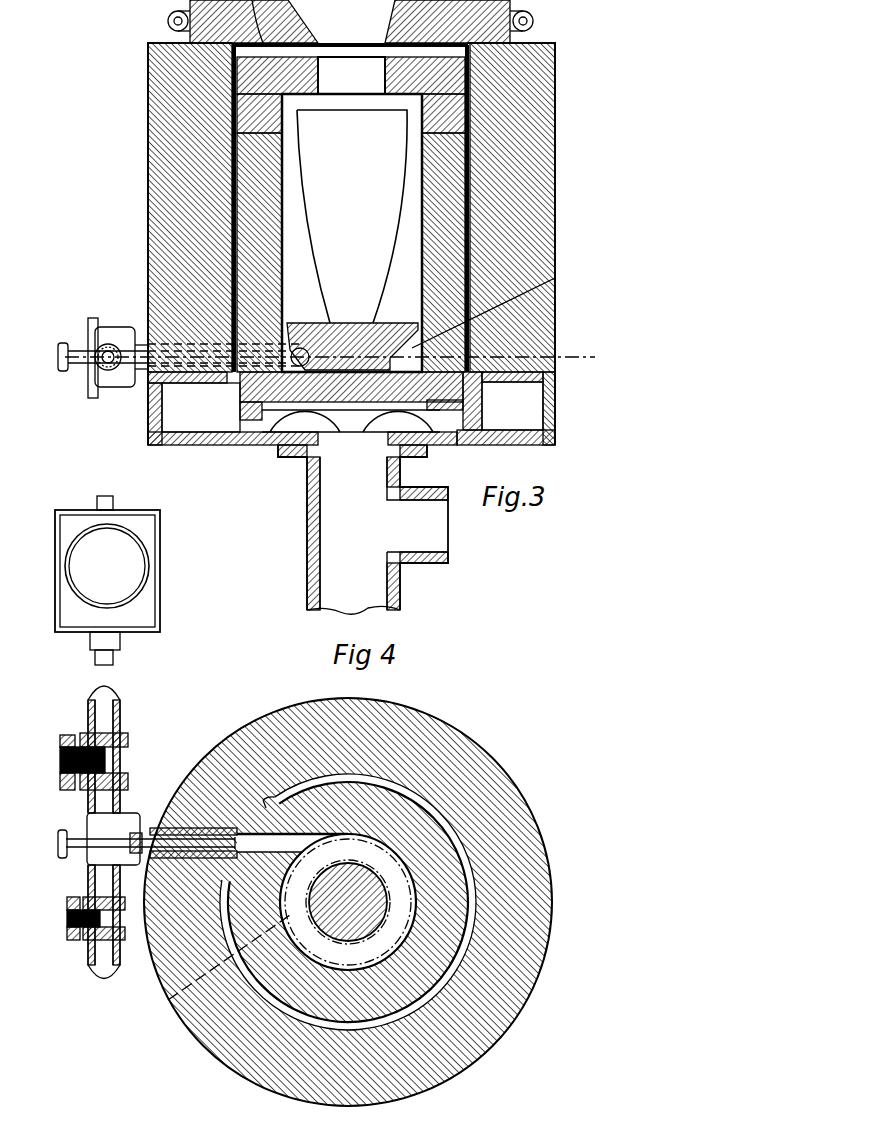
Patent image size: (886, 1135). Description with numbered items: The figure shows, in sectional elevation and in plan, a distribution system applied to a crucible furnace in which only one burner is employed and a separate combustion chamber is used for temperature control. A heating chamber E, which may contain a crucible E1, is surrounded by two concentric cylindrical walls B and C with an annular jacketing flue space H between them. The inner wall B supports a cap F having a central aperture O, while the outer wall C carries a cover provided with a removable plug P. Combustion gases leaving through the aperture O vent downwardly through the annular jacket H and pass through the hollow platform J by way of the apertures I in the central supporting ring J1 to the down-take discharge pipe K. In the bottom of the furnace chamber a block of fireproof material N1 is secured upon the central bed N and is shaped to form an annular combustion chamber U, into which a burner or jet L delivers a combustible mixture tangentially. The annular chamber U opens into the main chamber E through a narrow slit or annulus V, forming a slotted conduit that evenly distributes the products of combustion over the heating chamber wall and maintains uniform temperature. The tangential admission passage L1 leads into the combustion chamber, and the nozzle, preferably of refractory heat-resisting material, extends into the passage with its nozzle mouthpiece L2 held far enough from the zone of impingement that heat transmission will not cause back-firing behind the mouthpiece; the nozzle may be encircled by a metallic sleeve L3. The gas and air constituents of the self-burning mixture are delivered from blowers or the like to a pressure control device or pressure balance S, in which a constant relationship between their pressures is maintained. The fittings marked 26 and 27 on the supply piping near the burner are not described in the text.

In FIG. 3, the removable plug P is at (350, 21).
In FIG. 3, the central aperture O is at (351, 75).
In FIG. 3, the cap F is at (458, 93).
In FIG. 3, the heating chamber E is at (415, 158).
In FIG. 3, the crucible E1 is at (352, 215).
In FIG. 3, the inner cylindrical wall B is at (448, 178).
In FIG. 4, the inner cylindrical wall B is at (402, 823).
In FIG. 3, the annular jacketing flue space H is at (470, 204).
In FIG. 4, the annular jacketing flue space H is at (457, 855).
In FIG. 3, the outer cylindrical wall C is at (540, 246).
In FIG. 4, the outer cylindrical wall C is at (477, 790).
In FIG. 3, the annular combustion chamber U is at (496, 305).
In FIG. 3, the hollow platform J is at (540, 405).
In FIG. 3, the central supporting ring J1 is at (470, 420).
In FIG. 3, the central bed N is at (463, 395).
In FIG. 3, the block of fireproof material N1 is at (345, 330).
In FIG. 4, the block of fireproof material N1 is at (370, 910).
In FIG. 3, the narrow slit or annulus V is at (418, 323).
In FIG. 4, the narrow slit or annulus V is at (168, 1000).
In FIG. 3, the burner or jet L is at (158, 400).
In FIG. 4, the burner or jet L is at (397, 900).
In FIG. 4, the admission passage L1 is at (243, 845).
In FIG. 4, the nozzle mouthpiece L2 is at (192, 842).
In FIG. 4, the metallic sleeve L3 is at (165, 828).
In FIG. 3, the apertures I is at (322, 445).
In FIG. 3, the down-take discharge pipe K is at (322, 510).
In FIG. 3, the pressure control device or pressure balance S is at (107, 580).
In FIG. 4, the pipe fitting 26 is at (78, 922).
In FIG. 4, the pipe fitting 27 is at (77, 749).